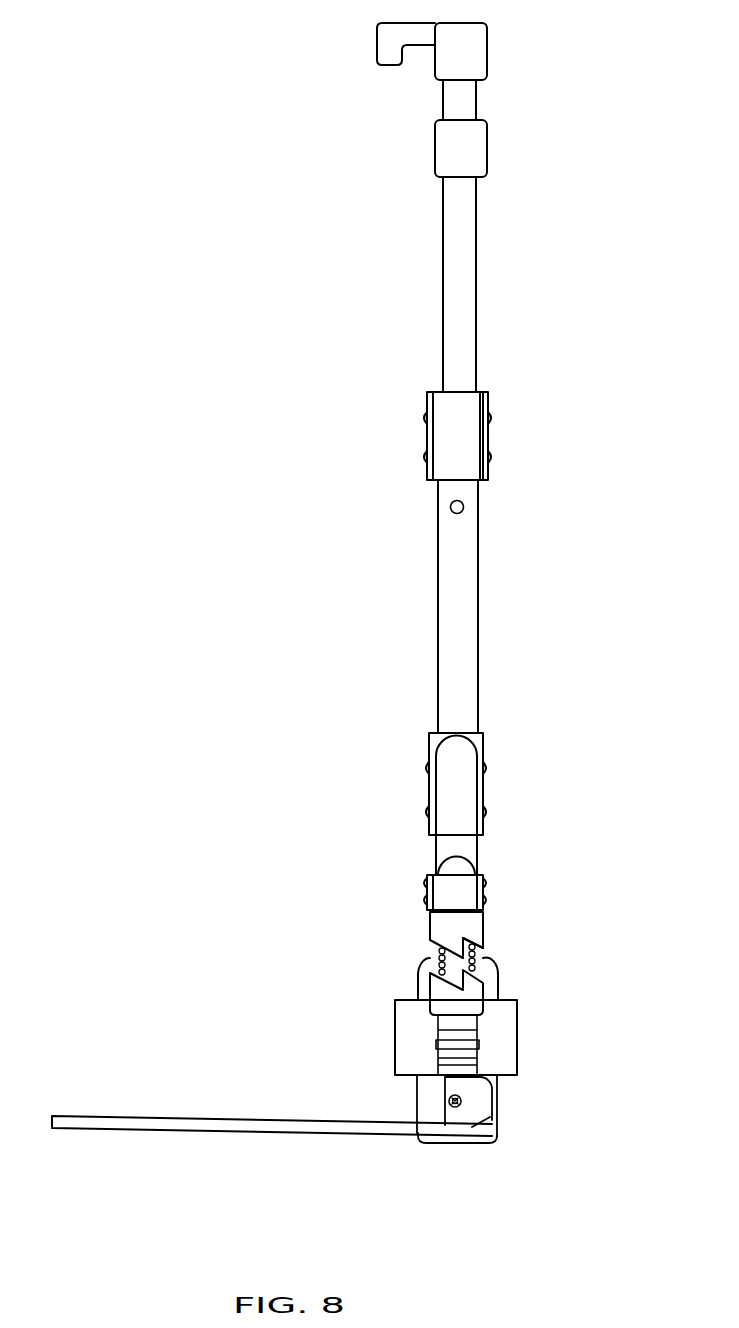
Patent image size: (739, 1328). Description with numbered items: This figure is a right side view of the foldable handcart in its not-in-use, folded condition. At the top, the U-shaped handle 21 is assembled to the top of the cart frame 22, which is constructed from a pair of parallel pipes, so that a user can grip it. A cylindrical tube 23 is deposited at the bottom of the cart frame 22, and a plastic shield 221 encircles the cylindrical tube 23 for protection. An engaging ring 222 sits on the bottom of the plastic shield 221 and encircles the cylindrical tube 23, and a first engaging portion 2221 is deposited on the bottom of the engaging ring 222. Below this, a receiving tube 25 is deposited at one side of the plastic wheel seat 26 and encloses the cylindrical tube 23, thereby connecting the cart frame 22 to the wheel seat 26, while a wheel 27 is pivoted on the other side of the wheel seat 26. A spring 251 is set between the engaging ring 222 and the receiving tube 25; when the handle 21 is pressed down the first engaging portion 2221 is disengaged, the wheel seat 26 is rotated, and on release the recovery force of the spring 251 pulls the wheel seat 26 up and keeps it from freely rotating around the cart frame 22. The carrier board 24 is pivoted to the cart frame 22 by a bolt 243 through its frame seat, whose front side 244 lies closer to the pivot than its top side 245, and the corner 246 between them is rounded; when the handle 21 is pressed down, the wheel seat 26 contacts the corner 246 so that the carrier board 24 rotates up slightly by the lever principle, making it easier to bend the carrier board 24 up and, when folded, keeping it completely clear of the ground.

The handle 21 is at (382, 57).
The cart frame 22 is at (467, 285).
The cylindrical tube 23 is at (462, 622).
The plastic shield 221 is at (463, 797).
The engaging ring 222 is at (442, 927).
The first engaging portion 2221 is at (480, 938).
The spring 251 is at (470, 970).
The wheel 27 is at (427, 970).
The receiving tube 25 is at (477, 993).
The wheel seat 26 is at (503, 1035).
The carrier board 24 is at (87, 1122).
The bolt 243 is at (447, 1102).
The front side 244 is at (440, 1108).
The top side 245 is at (480, 1082).
The corner 246 is at (447, 1074).